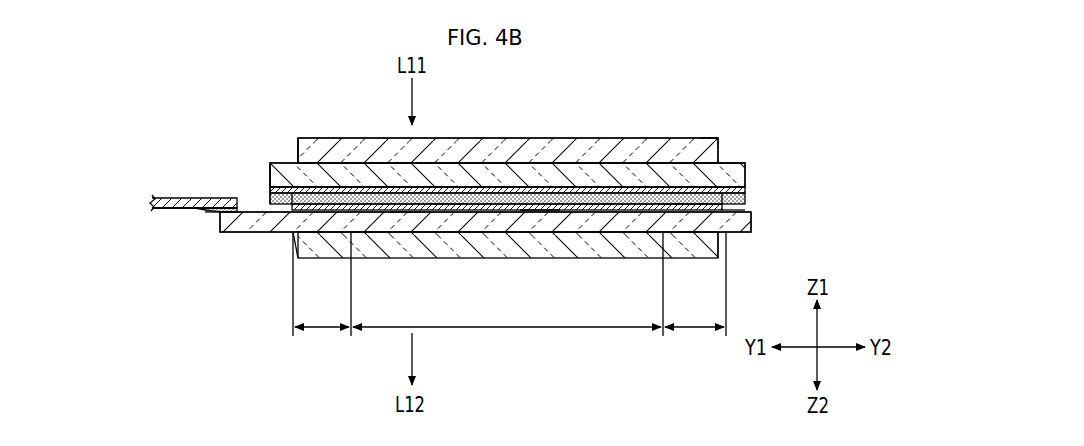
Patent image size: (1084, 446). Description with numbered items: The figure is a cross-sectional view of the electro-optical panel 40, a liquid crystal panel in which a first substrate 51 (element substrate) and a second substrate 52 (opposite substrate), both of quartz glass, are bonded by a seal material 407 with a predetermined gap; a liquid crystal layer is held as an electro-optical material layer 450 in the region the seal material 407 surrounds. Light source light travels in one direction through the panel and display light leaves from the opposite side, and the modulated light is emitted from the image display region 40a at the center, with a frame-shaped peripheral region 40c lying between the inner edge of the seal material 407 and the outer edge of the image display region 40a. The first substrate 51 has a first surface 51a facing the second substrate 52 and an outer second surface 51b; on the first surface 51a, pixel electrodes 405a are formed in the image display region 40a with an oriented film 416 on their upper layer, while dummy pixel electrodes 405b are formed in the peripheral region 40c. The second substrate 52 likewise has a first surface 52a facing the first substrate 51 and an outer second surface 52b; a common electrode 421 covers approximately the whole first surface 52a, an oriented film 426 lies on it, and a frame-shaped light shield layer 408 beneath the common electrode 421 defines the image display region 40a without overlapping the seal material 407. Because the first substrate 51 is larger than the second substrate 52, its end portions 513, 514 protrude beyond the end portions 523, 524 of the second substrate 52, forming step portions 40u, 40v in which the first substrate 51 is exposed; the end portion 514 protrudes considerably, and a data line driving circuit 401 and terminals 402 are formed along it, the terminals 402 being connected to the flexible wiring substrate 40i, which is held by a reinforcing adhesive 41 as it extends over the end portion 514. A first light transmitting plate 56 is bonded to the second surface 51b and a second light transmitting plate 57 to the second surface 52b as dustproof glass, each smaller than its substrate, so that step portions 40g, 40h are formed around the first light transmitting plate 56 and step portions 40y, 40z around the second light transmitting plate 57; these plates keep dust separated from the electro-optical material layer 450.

The electro-optical panel 40 is at (766, 92).
The image display region 40a is at (507, 341).
The peripheral region 40c is at (509, 294).
The step portion 40g is at (722, 242).
The step portion 40h is at (290, 240).
The flexible wiring substrate 40i is at (168, 209).
The step portion 40u is at (752, 208).
The step portion 40v is at (269, 172).
The step portion 40y is at (740, 162).
The step portion 40z is at (297, 150).
The adhesive 41 is at (213, 217).
The first substrate 51 is at (748, 234).
The first surface 51a is at (368, 233).
The second surface 51b is at (402, 233).
The second substrate 52 is at (748, 174).
The first surface 52a is at (509, 186).
The second surface 52b is at (568, 170).
The first light transmitting plate 56 is at (627, 259).
The second light transmitting plate 57 is at (710, 137).
The data line driving circuit 401 is at (262, 213).
The terminals 402 is at (236, 198).
The pixel electrodes 405a is at (478, 210).
The dummy pixel electrodes 405b is at (687, 208).
The seal material 407 is at (748, 198).
The light shield layer 408 is at (333, 152).
The oriented film 416 is at (538, 207).
The common electrode 421 is at (443, 200).
The oriented film 426 is at (596, 200).
The electro-optical material layer 450 is at (585, 233).
The end portion 513 is at (753, 221).
The end portion 514 is at (222, 213).
The end portion 523 is at (748, 189).
The end portion 524 is at (269, 180).